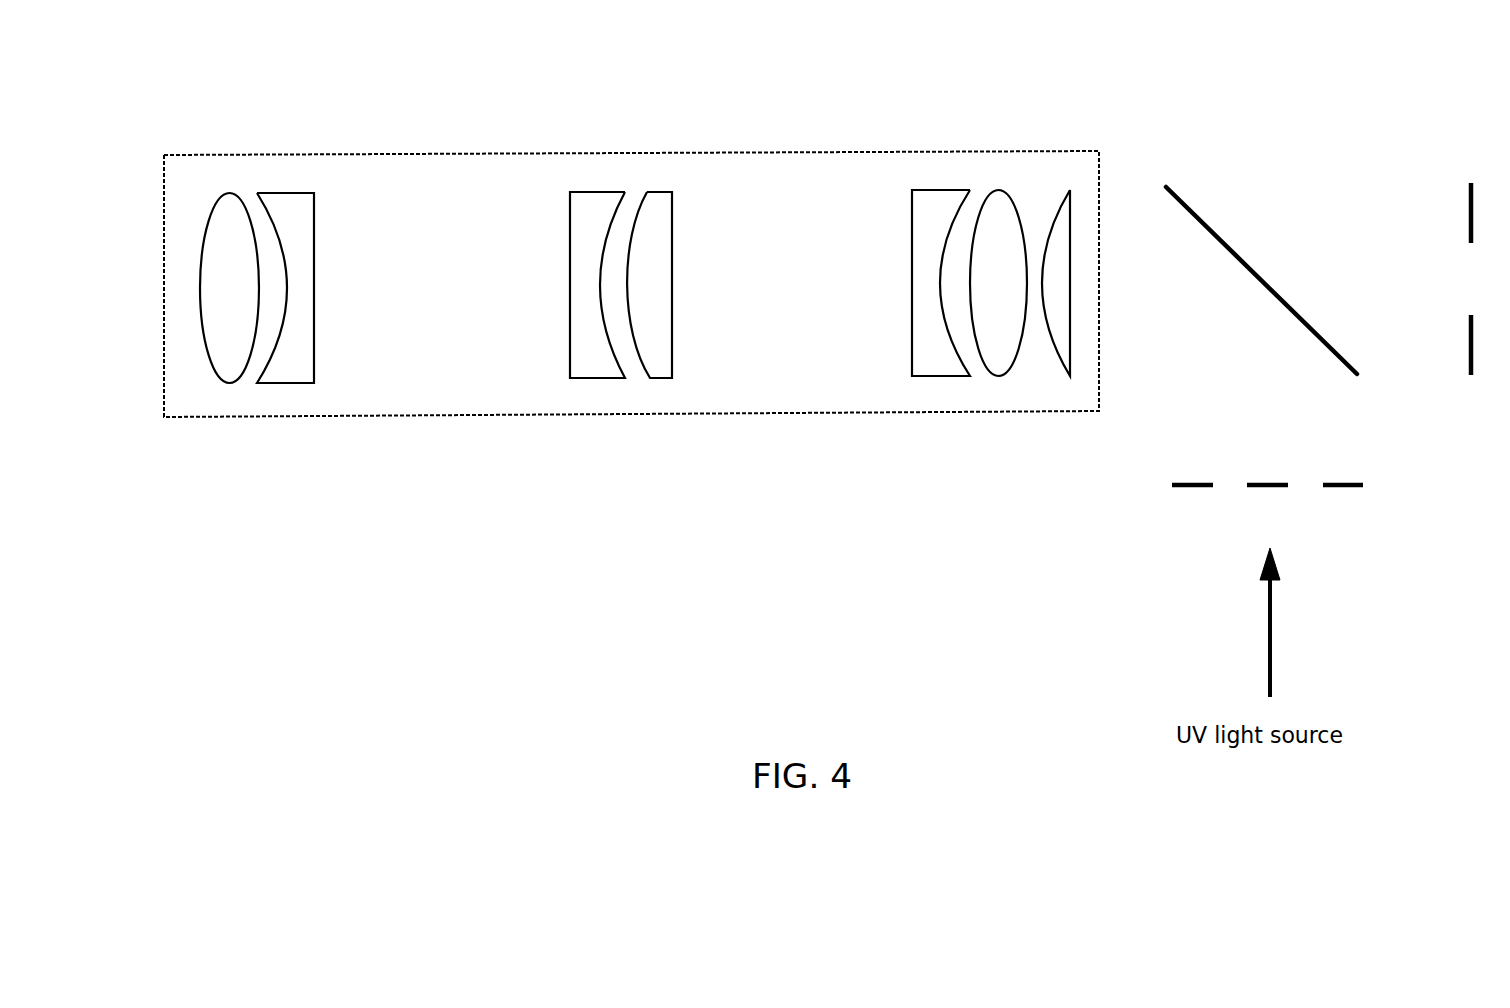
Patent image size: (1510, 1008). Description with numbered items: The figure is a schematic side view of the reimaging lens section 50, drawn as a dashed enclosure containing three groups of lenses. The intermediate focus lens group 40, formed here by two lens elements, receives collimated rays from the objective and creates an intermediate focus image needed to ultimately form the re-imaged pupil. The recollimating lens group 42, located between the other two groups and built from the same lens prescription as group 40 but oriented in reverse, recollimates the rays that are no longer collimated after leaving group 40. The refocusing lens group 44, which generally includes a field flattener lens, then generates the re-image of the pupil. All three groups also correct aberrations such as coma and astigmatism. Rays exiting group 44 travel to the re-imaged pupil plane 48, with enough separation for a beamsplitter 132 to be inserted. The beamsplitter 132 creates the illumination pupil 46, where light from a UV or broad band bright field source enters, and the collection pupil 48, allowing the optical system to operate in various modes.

The intermediate focus lens group 40 is at (192, 130).
The recollimating lens group 42 is at (683, 127).
The refocusing lens group 44 is at (1079, 123).
The illumination pupil 46 is at (1342, 485).
The re-imaged pupil plane 48 is at (1467, 195).
The reimaging lens section 50 is at (282, 417).
The beamsplitter 132 is at (1193, 207).